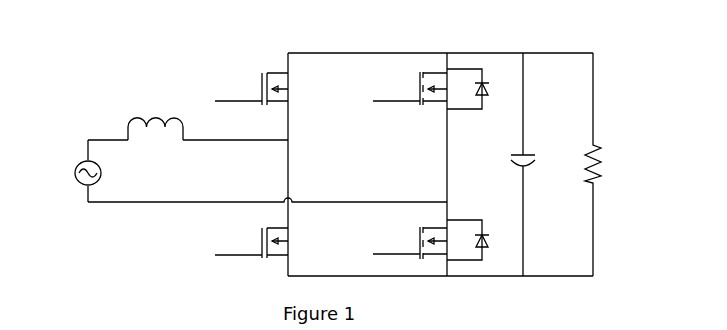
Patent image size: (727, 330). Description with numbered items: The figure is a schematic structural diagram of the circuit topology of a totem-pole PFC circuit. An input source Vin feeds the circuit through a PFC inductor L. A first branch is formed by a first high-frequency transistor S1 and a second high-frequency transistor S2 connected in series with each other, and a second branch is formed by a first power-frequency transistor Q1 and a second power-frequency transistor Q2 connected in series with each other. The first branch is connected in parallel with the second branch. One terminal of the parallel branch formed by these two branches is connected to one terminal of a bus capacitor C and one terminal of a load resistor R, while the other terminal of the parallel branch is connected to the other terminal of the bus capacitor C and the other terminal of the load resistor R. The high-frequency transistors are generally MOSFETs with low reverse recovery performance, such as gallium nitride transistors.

The AC input voltage source Vin is at (70, 173).
The PFC inductor L is at (155, 122).
The first high-frequency transistor S1 is at (251, 89).
The second high-frequency transistor S2 is at (251, 243).
The first power-frequency transistor Q1 is at (431, 89).
The second power-frequency transistor Q2 is at (431, 240).
The bus capacitor C is at (534, 164).
The load resistor R is at (604, 164).